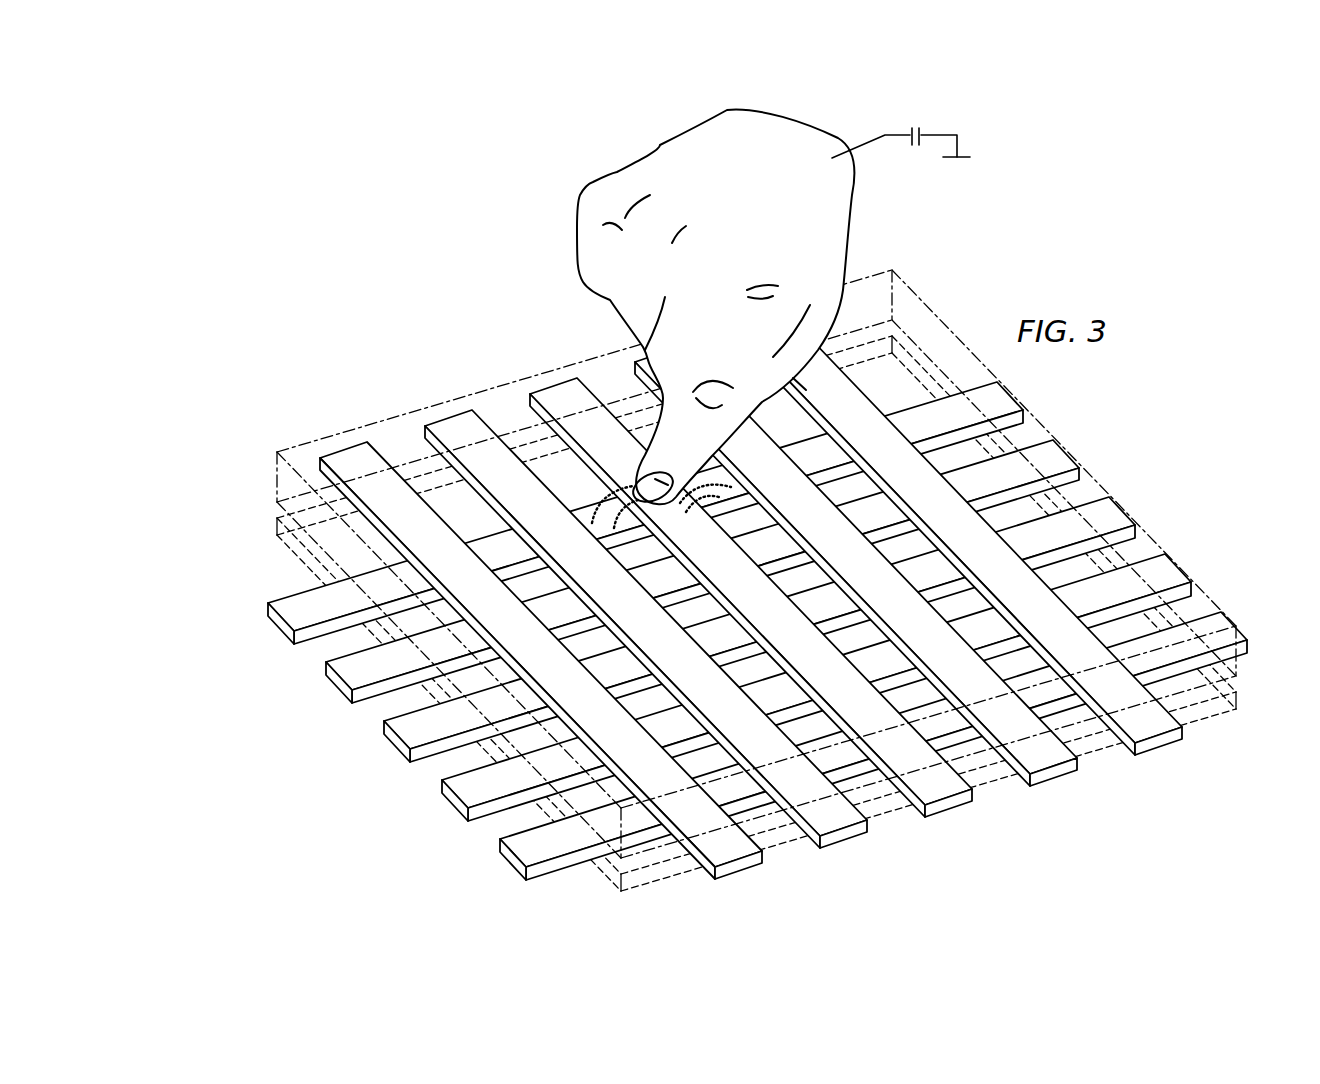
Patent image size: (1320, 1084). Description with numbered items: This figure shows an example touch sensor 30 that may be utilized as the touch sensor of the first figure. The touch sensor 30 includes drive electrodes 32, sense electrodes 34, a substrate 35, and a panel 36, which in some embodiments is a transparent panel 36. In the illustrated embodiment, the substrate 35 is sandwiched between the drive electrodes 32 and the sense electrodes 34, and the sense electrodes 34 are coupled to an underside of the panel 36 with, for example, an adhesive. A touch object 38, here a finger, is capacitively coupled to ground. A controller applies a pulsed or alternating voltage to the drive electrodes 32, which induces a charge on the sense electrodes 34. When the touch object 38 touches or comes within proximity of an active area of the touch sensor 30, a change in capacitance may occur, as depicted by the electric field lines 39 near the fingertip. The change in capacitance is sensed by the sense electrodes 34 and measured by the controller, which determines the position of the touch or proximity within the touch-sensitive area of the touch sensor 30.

The touch sensor 30 is at (401, 273).
The drive electrodes 32 is at (520, 886).
The sense electrodes 34 is at (730, 905).
The substrate 35 is at (278, 528).
The panel 36 is at (395, 426).
The touch object 38 is at (764, 206).
The electric field lines 39 is at (589, 498).